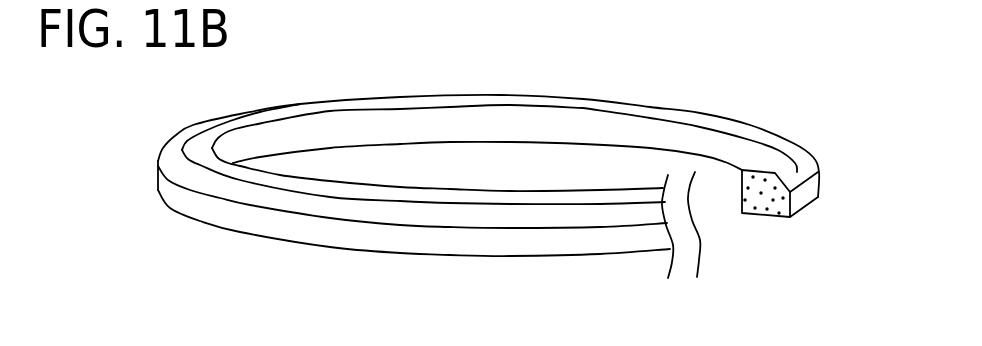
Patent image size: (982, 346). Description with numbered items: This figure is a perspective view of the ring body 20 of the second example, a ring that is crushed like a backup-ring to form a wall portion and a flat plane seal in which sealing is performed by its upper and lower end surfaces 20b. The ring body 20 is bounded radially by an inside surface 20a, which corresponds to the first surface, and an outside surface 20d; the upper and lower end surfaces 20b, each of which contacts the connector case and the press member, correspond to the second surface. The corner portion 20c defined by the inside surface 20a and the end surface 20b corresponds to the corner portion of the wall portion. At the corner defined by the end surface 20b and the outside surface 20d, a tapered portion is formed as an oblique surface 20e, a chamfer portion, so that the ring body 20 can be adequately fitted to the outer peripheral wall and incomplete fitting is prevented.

The ring body 20 is at (528, 147).
The inside surface 20a is at (650, 135).
The end surface 20b is at (702, 110).
The corner portion 20c is at (517, 144).
The outside surface 20d is at (808, 198).
The oblique surface 20e is at (760, 127).